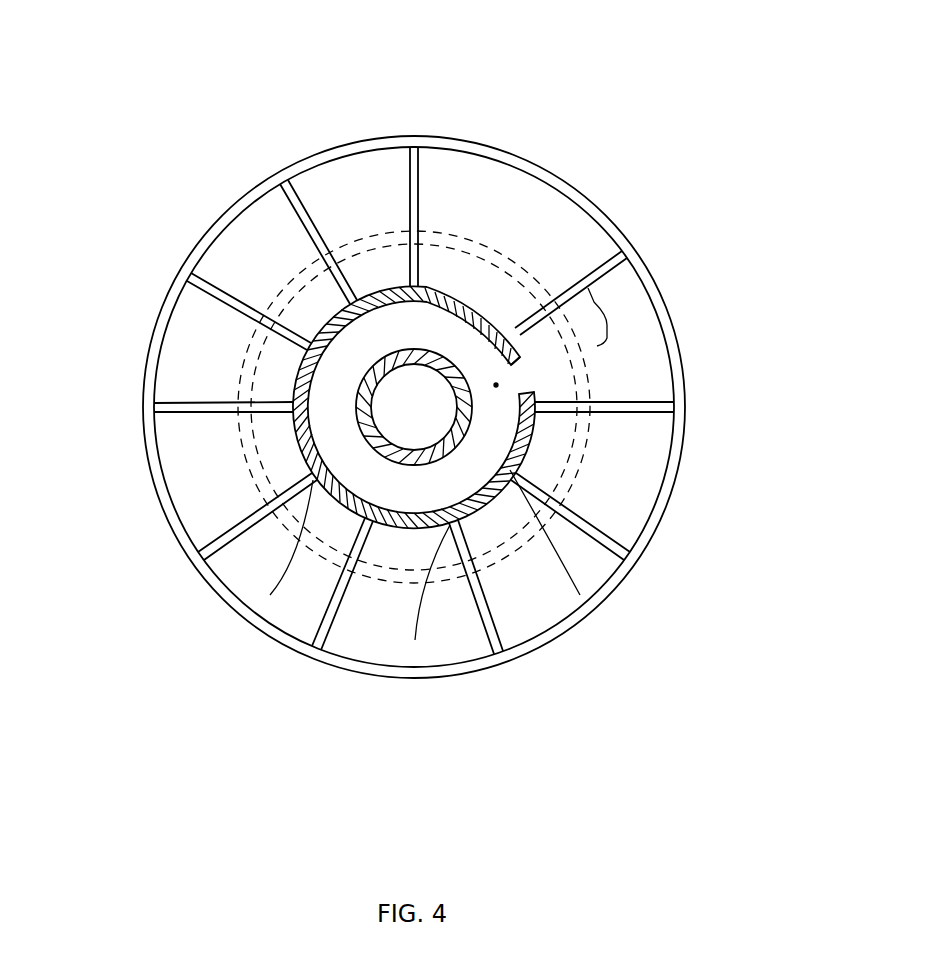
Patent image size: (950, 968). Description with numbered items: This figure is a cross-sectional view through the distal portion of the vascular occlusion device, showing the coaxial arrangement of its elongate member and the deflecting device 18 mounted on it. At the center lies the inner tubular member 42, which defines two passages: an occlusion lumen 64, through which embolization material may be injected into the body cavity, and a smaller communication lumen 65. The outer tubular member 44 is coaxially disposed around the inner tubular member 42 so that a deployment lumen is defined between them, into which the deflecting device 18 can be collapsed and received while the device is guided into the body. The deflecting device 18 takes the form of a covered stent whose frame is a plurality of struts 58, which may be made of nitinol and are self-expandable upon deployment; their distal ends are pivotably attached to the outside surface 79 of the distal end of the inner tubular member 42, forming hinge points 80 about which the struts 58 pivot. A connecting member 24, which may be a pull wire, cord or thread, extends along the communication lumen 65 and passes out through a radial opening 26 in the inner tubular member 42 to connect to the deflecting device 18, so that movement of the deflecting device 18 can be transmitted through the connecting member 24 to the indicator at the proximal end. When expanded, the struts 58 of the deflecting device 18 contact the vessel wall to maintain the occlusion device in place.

The deflecting device 18 is at (313, 143).
The outer tubular member 44 is at (463, 232).
The communication lumen 65 is at (414, 407).
The outside surface 79 is at (470, 298).
The occlusion lumen 64 is at (414, 407).
The struts 58 is at (290, 185).
The hinge points 80 is at (270, 595).
The inner tubular member 42 is at (503, 319).
The connecting member 24 is at (610, 317).
The radial opening 26 is at (496, 385).